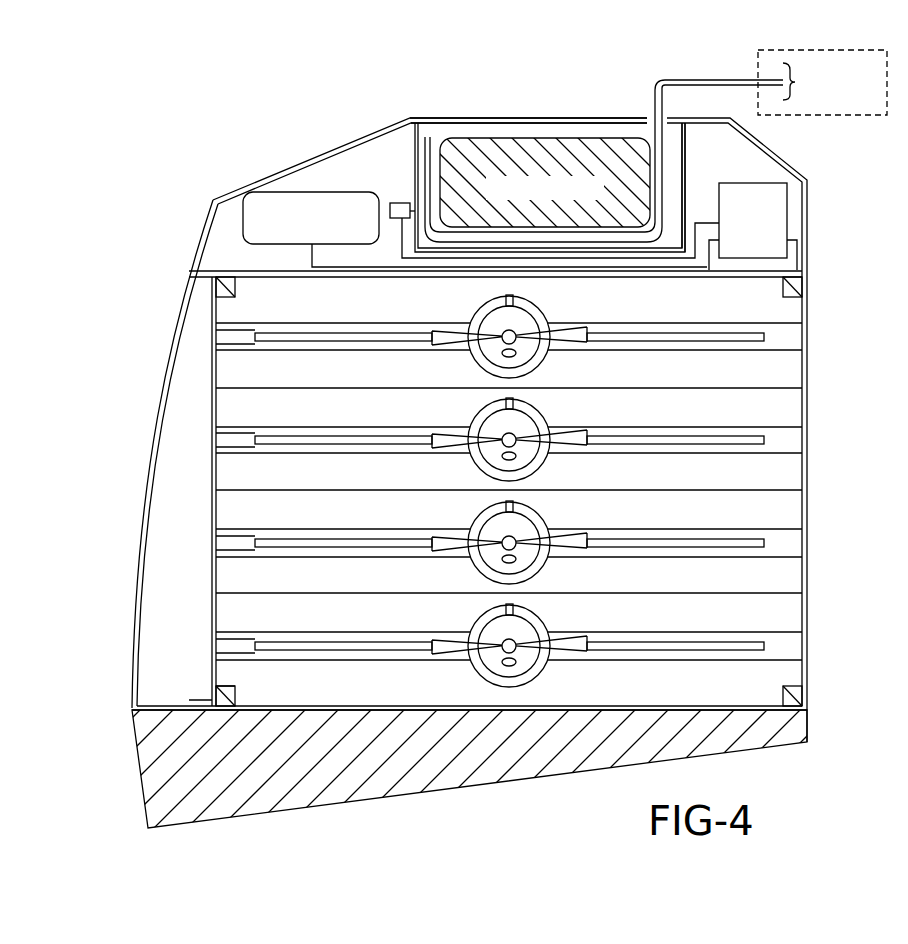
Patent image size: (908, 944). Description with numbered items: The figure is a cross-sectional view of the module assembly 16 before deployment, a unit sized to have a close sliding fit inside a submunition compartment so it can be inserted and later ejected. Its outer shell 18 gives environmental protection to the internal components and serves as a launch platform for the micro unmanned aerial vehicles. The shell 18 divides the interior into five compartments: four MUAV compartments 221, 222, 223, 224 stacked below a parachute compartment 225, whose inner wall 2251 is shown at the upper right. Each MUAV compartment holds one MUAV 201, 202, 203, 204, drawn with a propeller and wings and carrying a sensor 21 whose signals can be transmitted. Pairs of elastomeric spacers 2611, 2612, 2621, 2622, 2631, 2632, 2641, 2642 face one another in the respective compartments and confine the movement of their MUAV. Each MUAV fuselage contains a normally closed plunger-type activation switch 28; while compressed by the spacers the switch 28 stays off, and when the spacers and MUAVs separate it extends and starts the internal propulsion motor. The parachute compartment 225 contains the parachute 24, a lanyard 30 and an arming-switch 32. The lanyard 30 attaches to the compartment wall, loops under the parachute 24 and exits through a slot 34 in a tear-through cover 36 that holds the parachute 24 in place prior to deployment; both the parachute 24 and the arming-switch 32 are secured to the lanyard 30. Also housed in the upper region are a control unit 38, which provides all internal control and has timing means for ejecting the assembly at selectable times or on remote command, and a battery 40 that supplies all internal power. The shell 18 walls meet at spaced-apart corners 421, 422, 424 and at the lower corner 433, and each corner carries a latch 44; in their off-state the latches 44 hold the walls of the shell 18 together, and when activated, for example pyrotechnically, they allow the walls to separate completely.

The module assembly 16 is at (74, 272).
The shell 18 is at (672, 742).
The MUAV 201 is at (500, 320).
The MUAV 202 is at (500, 423).
The MUAV 203 is at (500, 526).
The MUAV 204 is at (500, 629).
The sensor 21 is at (516, 354).
The compartment 221 is at (202, 336).
The compartment 222 is at (202, 442).
The compartment 223 is at (202, 541).
The compartment 224 is at (202, 640).
The parachute compartment 225 is at (453, 122).
The compartment wall 2251 is at (688, 175).
The parachute 24 is at (527, 147).
The spacer 2611 is at (812, 315).
The spacer 2612 is at (790, 372).
The spacer 2621 is at (782, 408).
The spacer 2622 is at (790, 475).
The spacer 2631 is at (790, 513).
The spacer 2632 is at (790, 578).
The spacer 2641 is at (786, 619).
The spacer 2642 is at (792, 678).
The activation switch 28 is at (518, 300).
The lanyard 30 is at (706, 79).
The arming-switch 32 is at (390, 196).
The slot 34 is at (655, 118).
The tear-through cover 36 is at (559, 108).
The control unit 38 is at (778, 210).
The battery 40 is at (283, 192).
The corner 421 is at (189, 272).
The corner 422 is at (807, 270).
The corner 424 is at (206, 705).
The base plate 433 is at (807, 708).
The latch 44 is at (223, 277).